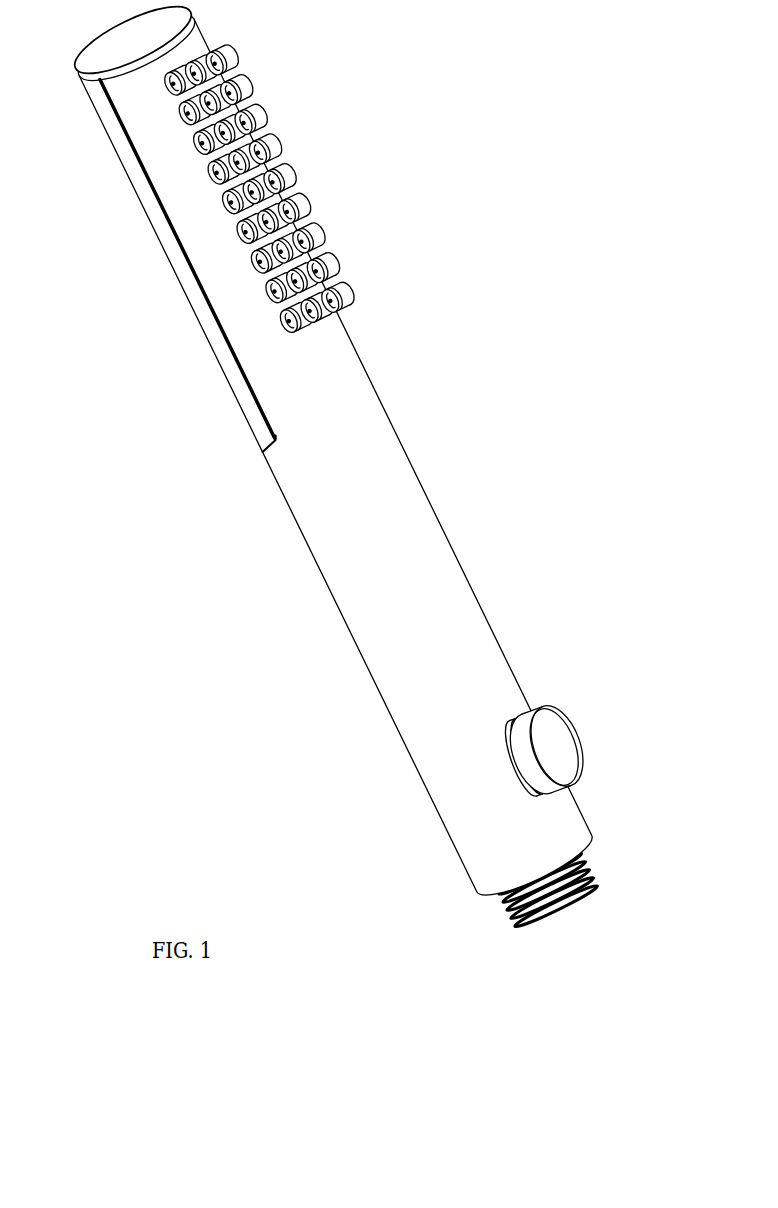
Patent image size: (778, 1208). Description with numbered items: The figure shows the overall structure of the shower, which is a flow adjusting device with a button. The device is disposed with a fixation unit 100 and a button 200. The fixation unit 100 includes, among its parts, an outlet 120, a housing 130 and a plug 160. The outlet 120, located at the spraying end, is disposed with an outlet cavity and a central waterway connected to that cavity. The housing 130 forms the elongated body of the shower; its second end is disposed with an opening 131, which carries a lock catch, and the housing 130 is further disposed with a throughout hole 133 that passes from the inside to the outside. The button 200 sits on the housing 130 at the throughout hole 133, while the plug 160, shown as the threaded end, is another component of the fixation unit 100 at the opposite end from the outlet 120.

The fixation unit 100 is at (462, 396).
The outlet 120 is at (198, 300).
The housing 130 is at (313, 368).
The opening 131 is at (258, 447).
The throughout hole 133 is at (517, 773).
The plug 160 is at (558, 905).
The button 200 is at (550, 742).